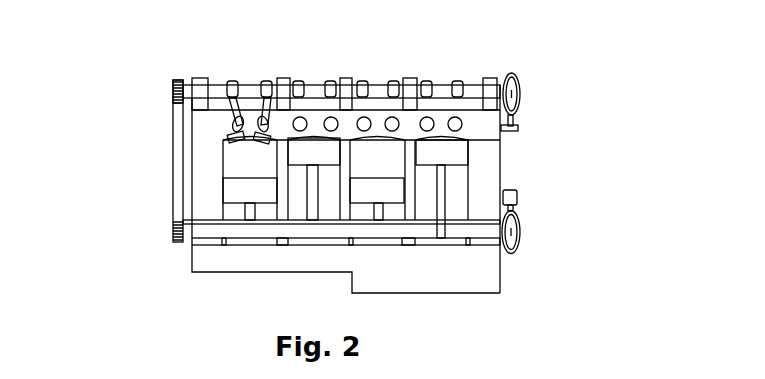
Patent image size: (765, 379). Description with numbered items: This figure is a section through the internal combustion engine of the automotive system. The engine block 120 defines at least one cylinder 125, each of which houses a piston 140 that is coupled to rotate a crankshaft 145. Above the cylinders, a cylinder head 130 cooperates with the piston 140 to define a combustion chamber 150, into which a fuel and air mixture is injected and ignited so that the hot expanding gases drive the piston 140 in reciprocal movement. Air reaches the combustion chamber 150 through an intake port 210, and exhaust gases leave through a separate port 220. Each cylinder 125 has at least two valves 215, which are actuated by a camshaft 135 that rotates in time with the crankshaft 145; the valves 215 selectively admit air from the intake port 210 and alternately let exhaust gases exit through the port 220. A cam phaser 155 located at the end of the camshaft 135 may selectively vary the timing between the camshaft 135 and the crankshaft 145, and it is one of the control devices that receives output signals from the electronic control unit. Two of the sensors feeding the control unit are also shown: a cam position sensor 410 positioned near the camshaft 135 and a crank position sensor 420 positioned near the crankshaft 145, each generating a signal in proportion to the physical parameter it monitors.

The engine block 120 is at (193, 180).
The cylinder 125 is at (402, 125).
The cylinder head 130 is at (178, 136).
The camshaft 135 is at (238, 79).
The piston 140 is at (382, 190).
The crankshaft 145 is at (220, 233).
The combustion chamber 150 is at (448, 137).
The cam phaser 155 is at (172, 90).
The intake port 210 is at (350, 164).
The valves 215 is at (247, 131).
The exhaust port 220 is at (310, 85).
The cam position sensor 410 is at (518, 130).
The crank position sensor 420 is at (517, 193).